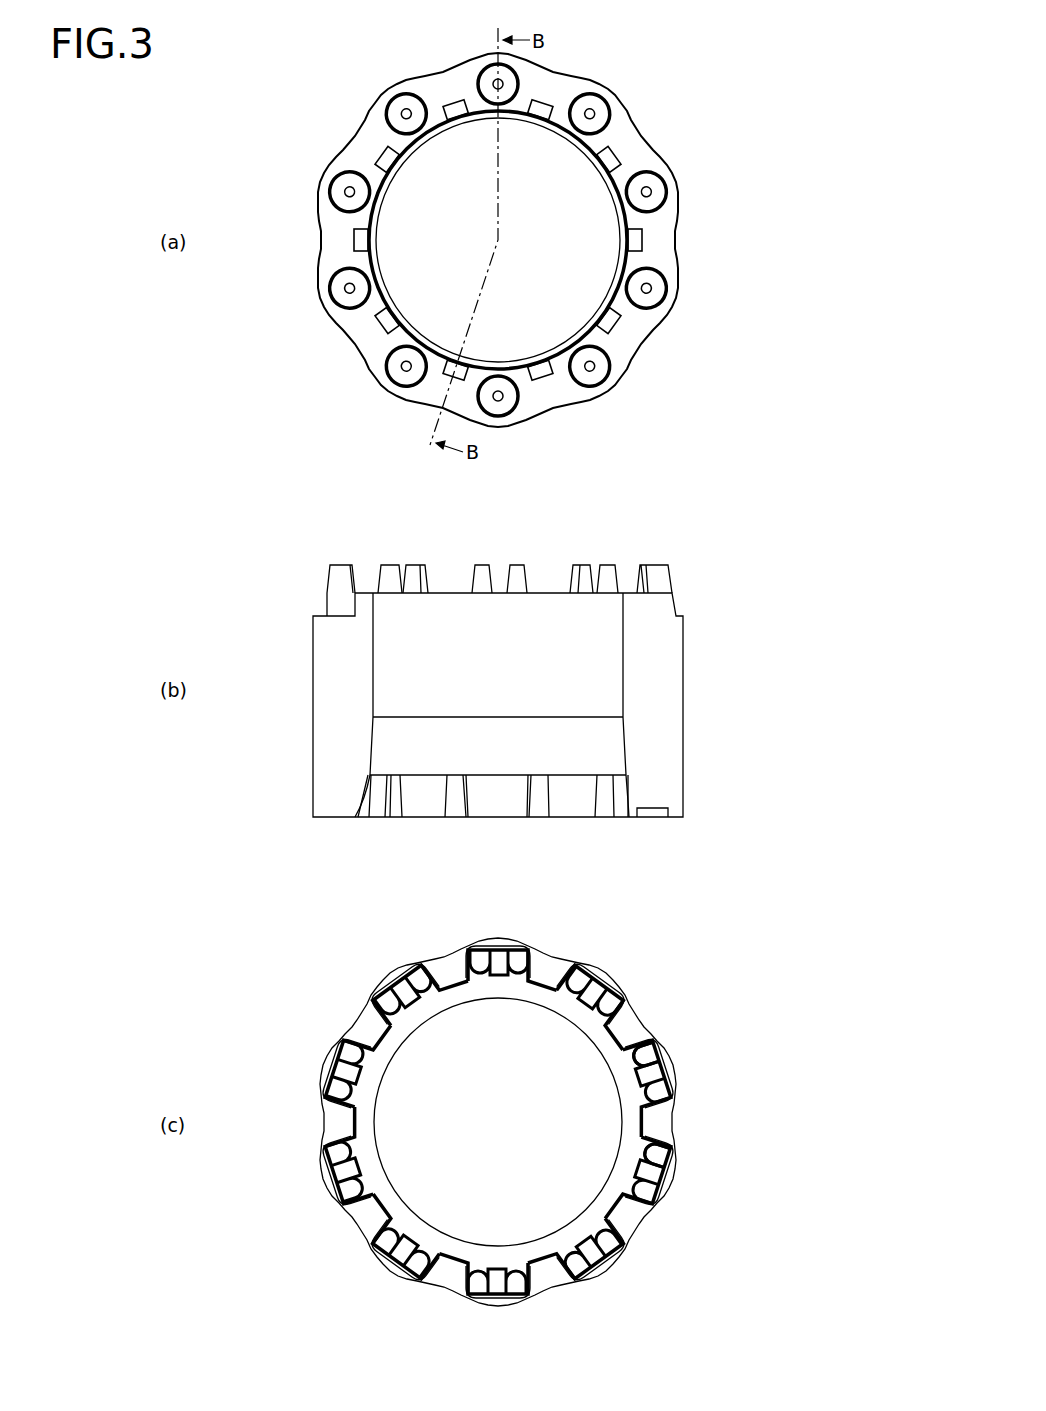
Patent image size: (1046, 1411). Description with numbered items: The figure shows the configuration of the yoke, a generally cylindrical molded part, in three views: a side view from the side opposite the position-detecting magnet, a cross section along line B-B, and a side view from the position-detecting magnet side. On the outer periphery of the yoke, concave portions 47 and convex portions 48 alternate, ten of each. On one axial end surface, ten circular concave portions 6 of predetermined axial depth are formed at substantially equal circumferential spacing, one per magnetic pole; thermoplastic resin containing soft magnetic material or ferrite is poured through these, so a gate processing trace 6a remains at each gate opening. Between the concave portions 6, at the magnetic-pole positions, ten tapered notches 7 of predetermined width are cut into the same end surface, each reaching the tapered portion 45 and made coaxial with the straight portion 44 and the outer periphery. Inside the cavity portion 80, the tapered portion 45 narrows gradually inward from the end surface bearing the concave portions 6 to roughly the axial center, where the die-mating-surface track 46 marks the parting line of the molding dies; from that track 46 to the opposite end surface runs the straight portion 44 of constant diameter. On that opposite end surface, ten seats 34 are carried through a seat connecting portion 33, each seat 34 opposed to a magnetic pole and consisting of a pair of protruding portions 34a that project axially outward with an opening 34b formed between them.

The concave portion 6 is at (663, 183).
The gate processing trace 6a is at (656, 194).
The tapered notch 7 is at (608, 157).
The seat connecting portion 33 is at (363, 603).
The seat 34 is at (662, 581).
The protruding portion 34a is at (663, 1160).
The opening 34b is at (665, 1070).
The straight portion 44 is at (623, 660).
The tapered portion 45 is at (625, 748).
The die-mating-surface track 46 is at (397, 717).
The concave portion 47 is at (560, 55).
The convex portion 48 is at (605, 82).
The cavity portion 80 is at (410, 656).